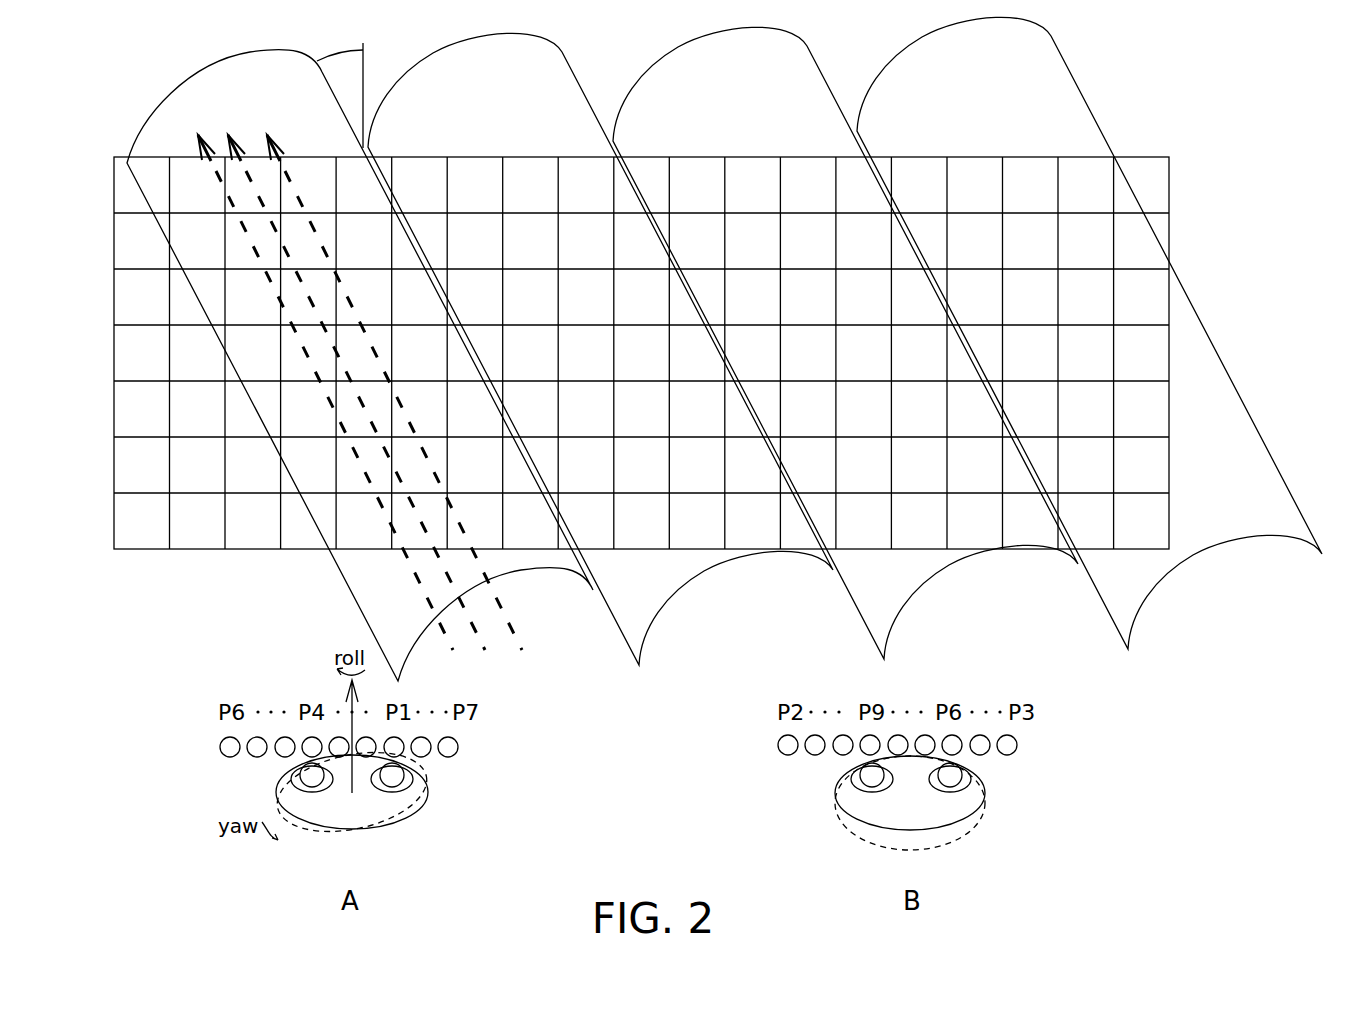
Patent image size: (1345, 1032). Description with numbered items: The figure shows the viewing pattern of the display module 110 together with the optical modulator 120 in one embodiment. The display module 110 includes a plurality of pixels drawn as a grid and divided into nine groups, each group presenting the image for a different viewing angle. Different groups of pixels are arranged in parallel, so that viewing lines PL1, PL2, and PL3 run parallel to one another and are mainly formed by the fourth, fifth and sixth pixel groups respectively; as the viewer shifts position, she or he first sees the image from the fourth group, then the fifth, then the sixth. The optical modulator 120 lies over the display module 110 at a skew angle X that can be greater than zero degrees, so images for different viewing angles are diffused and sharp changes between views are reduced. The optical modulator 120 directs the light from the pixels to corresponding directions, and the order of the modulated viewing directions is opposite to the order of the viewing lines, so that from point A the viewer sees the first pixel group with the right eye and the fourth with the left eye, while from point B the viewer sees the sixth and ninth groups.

The display module 110 is at (1169, 157).
The optical modulator 120 is at (1065, 57).
The viewing line PL1 is at (197, 144).
The viewing line PL2 is at (241, 146).
The viewing line PL3 is at (279, 146).
The skew angle X is at (340, 86).